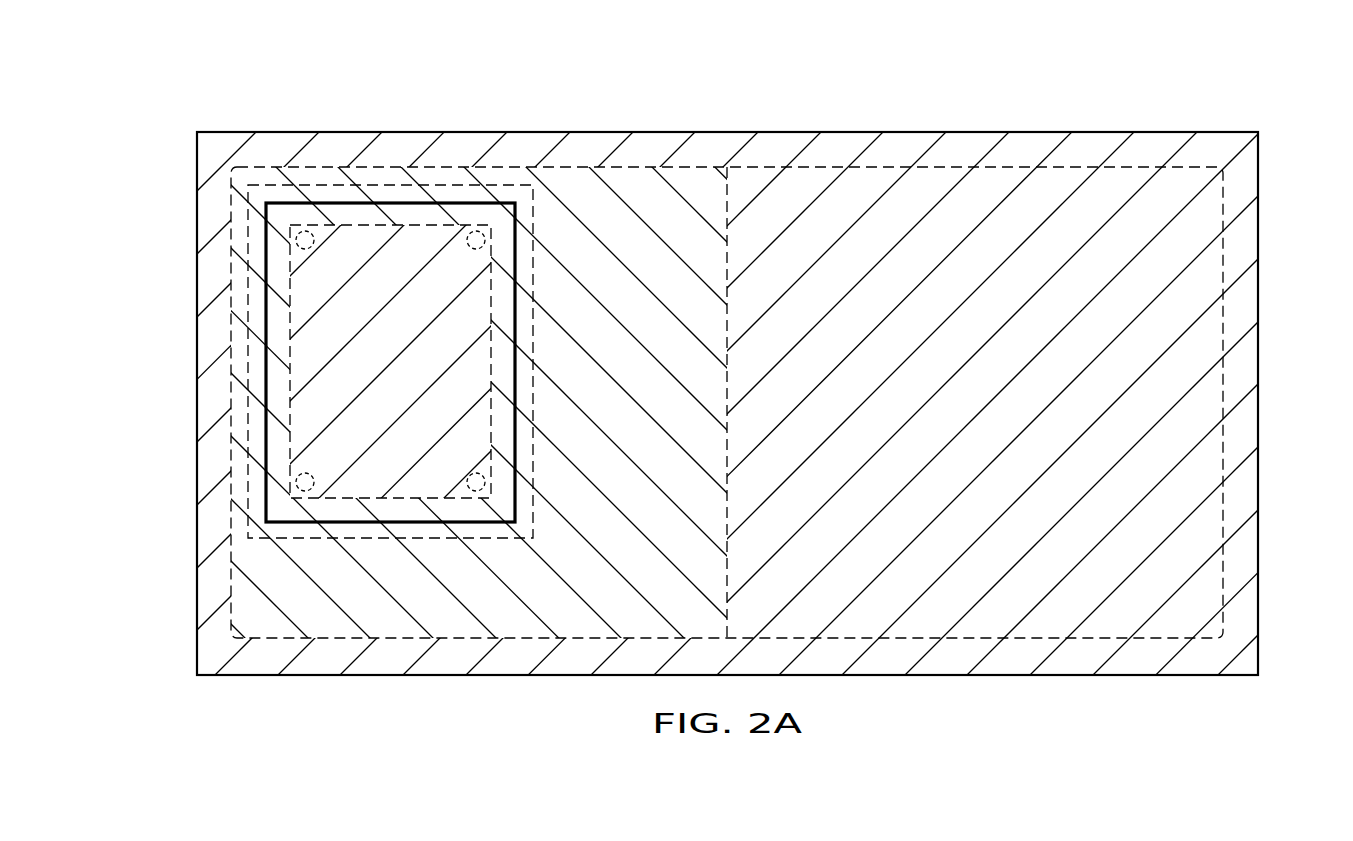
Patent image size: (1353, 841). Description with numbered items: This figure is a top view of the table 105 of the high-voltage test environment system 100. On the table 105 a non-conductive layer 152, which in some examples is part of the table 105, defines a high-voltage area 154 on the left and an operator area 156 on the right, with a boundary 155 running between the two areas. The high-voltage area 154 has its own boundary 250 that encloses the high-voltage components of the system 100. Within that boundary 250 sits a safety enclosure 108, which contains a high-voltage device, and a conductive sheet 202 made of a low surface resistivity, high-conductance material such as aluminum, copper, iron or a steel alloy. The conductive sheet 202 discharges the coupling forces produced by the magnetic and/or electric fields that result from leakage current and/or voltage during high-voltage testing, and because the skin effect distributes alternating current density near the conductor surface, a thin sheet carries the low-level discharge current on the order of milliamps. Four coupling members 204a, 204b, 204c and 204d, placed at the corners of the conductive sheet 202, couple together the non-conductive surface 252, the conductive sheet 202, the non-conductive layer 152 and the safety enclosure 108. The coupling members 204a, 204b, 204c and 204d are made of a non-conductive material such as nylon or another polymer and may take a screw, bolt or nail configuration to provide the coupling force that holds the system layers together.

The high-voltage test environment system 100 is at (676, 420).
The table 105 is at (848, 128).
The non-conductive layer 152 is at (1151, 155).
The boundary 155 is at (728, 198).
The operator area 156 is at (1228, 512).
The high-voltage area 154 is at (228, 580).
The non-conductive surface 252 is at (472, 585).
The boundary 250 is at (248, 367).
The safety enclosure 108 is at (262, 300).
The conductive sheet 202 is at (347, 235).
The coupling member 204a is at (297, 242).
The coupling member 204b is at (475, 230).
The coupling member 204c is at (468, 477).
The coupling member 204d is at (294, 483).